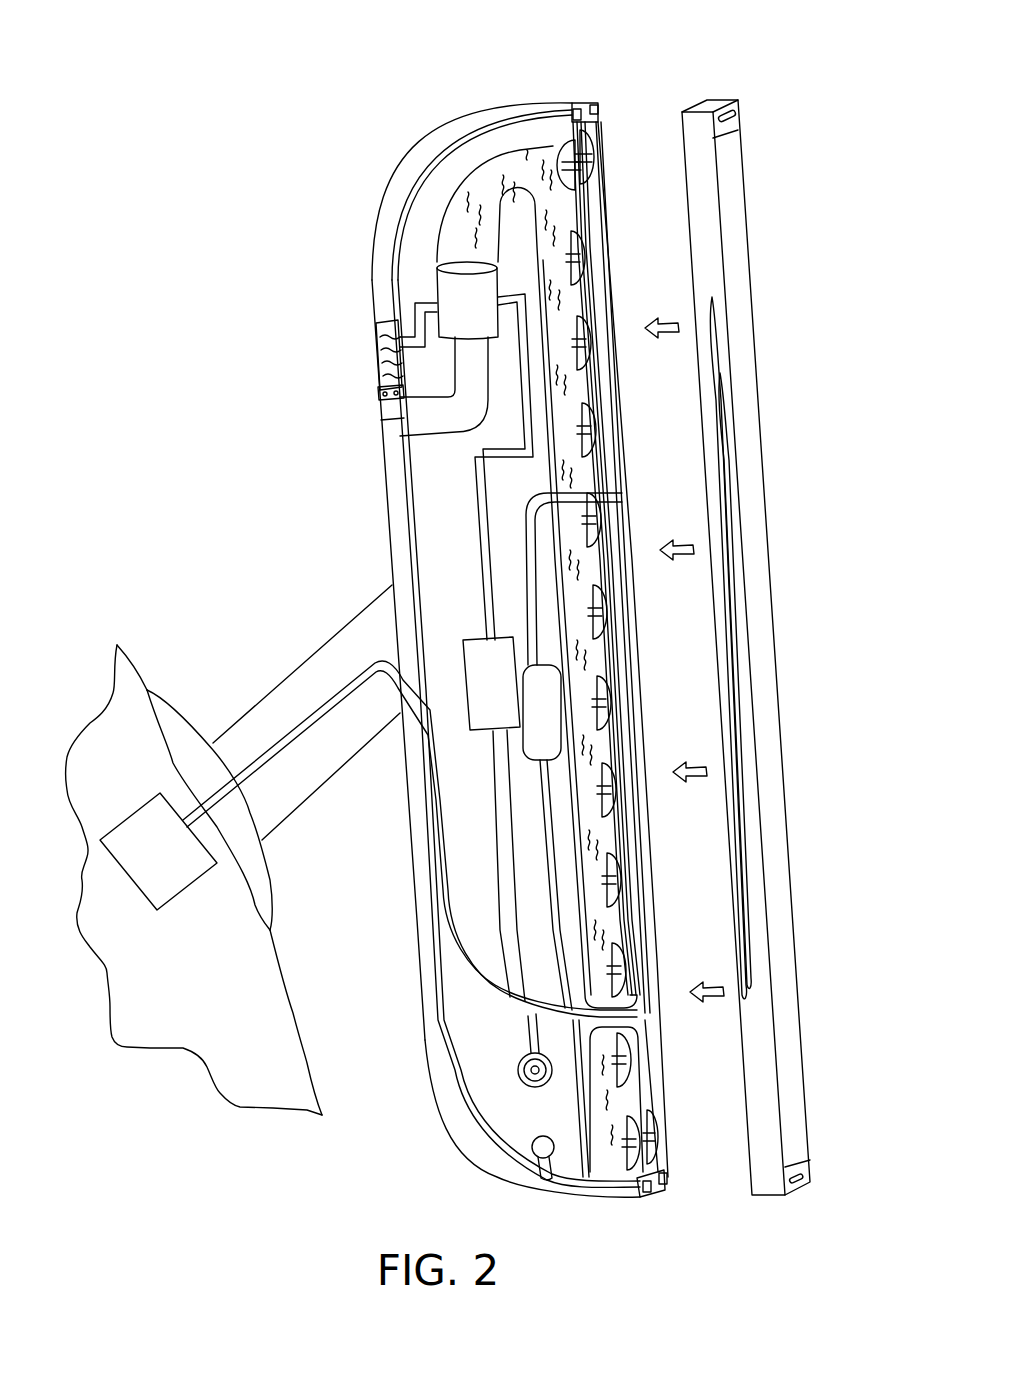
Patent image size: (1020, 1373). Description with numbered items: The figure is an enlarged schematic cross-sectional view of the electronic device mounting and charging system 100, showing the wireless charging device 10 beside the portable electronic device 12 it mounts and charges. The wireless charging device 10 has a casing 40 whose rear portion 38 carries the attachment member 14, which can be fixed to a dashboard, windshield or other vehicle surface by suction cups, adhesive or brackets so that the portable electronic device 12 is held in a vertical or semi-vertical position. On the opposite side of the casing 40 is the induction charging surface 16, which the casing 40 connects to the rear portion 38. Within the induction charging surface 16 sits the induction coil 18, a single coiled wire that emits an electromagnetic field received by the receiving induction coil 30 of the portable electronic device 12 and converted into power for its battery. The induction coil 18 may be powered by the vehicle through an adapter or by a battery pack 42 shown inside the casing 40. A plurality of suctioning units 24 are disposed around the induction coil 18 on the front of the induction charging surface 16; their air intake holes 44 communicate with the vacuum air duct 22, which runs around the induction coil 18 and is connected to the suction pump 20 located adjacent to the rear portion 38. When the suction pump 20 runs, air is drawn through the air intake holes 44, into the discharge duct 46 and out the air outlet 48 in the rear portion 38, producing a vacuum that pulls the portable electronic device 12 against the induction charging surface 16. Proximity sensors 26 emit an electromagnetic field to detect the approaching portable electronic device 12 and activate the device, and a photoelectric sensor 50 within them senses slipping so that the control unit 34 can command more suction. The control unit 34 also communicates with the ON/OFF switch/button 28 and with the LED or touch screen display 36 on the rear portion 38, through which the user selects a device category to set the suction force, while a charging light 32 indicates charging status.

The electronic device mounting and charging system 100 is at (287, 103).
The wireless charging device 10 is at (394, 170).
The portable electronic device 12 is at (710, 98).
The attachment member 14 is at (328, 645).
The induction charging surface 16 is at (590, 102).
The induction coil 18 is at (608, 330).
The suction pump 20 is at (445, 291).
The vacuum air duct 22 is at (508, 155).
The suctioning units 24 is at (596, 146).
The proximity sensors 26 is at (571, 106).
The ON/OFF switch/button 28 is at (534, 1152).
The receiving induction coil 30 is at (707, 418).
The charging light 32 is at (518, 1075).
The control unit 34 is at (467, 720).
The LED or touch screen display 36 is at (378, 352).
The rear portion 38 is at (430, 422).
The casing 40 is at (444, 136).
The battery pack 42 is at (524, 752).
The air intake holes 44 is at (605, 703).
The discharge duct 46 is at (392, 553).
The air outlet 48 is at (384, 419).
The photoelectric sensor 50 is at (576, 103).